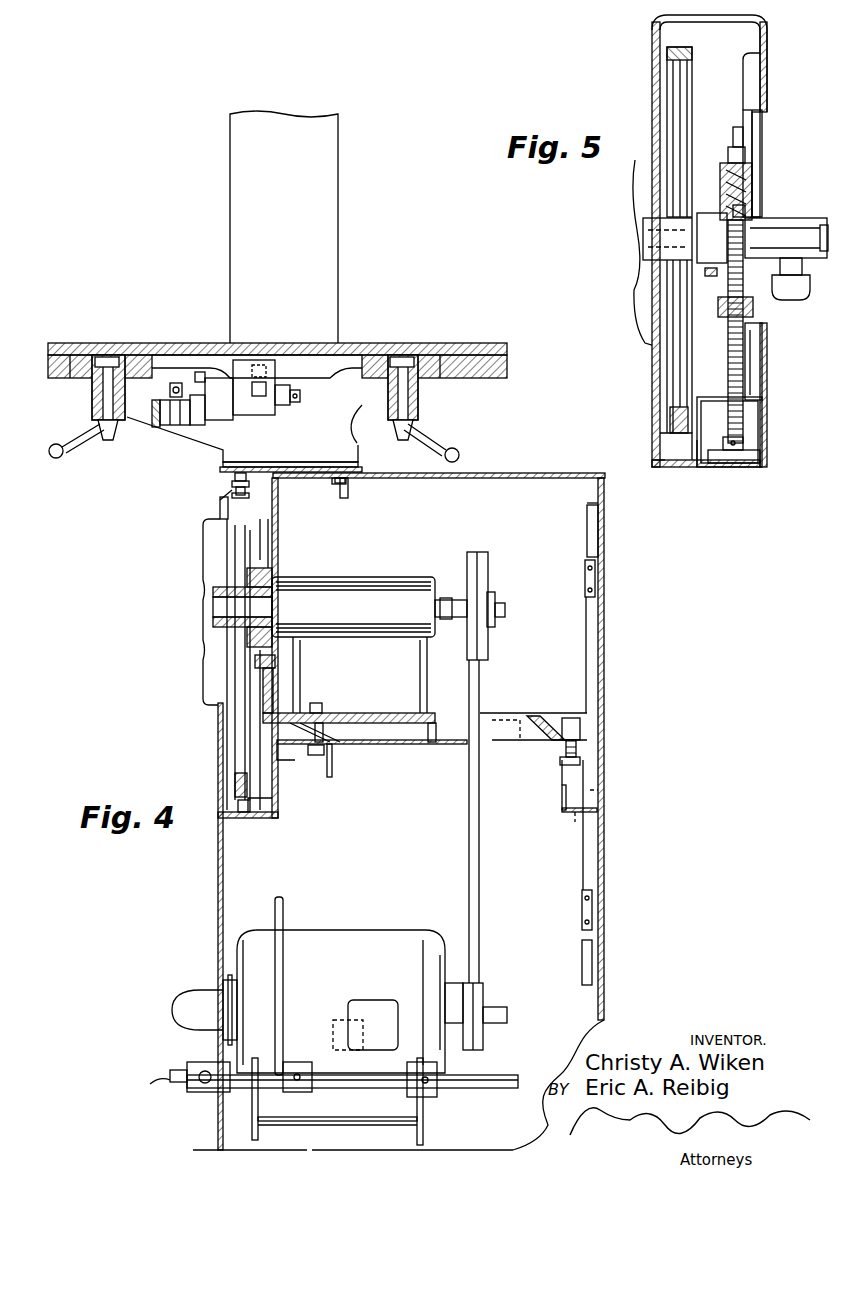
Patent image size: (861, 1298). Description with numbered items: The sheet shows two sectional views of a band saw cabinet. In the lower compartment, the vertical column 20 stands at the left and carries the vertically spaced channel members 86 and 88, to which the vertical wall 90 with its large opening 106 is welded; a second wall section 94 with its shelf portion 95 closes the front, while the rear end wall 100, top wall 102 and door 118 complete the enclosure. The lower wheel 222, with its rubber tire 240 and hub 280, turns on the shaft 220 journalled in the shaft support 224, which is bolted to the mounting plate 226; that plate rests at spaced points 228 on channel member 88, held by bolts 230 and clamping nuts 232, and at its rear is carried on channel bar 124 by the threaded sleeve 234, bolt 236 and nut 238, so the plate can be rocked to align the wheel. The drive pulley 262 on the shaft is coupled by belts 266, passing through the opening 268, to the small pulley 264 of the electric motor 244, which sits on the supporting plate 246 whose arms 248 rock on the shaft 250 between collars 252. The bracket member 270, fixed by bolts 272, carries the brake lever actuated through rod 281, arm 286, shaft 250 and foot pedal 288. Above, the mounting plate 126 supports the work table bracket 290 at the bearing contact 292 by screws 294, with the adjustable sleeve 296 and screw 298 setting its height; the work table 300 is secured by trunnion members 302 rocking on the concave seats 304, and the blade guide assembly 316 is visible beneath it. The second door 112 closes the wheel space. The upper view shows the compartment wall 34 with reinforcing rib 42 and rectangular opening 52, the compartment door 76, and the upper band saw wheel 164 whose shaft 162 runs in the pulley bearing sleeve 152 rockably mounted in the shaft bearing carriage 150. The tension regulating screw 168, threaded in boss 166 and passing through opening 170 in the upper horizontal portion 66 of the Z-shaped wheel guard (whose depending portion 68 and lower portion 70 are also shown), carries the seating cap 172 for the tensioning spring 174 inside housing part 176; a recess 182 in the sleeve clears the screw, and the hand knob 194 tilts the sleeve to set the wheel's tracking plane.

In FIG. 4, the vertical column 20 is at (342, 250).
In FIG. 4, the work table 300 is at (100, 343).
In FIG. 4, the trunnion members 302 is at (90, 385).
In FIG. 4, the arcuately concave seats 304 is at (92, 422).
In FIG. 4, the blade guide assembly 316 is at (246, 406).
In FIG. 4, the supporting bracket 290 is at (306, 446).
In FIG. 4, the rockable bearing contact 292 is at (340, 462).
In FIG. 4, the mounting plate 126 is at (282, 470).
In FIG. 4, the screws 294 is at (344, 486).
In FIG. 4, the top wall 102 is at (490, 474).
In FIG. 4, the door 118 is at (598, 625).
In FIG. 4, the adjustable sleeve 296 is at (232, 484).
In FIG. 4, the bolt or screw 298 is at (222, 500).
In FIG. 4, the horizontal member 86 is at (280, 483).
In FIG. 4, the vertical wall 90 is at (278, 532).
In FIG. 4, the large diameter opening 106 is at (228, 558).
In FIG. 4, the second door 112 is at (204, 585).
In FIG. 4, the lower wheel 222 is at (238, 802).
In FIG. 4, the horizontal flange or shelf portion 95 is at (243, 818).
In FIG. 4, the peripheral tires 240 is at (258, 812).
In FIG. 5, the peripheral tires 240 is at (672, 437).
In FIG. 4, the hub 280 is at (258, 650).
In FIG. 4, the shaft support 224 is at (408, 655).
In FIG. 4, the mounting plate 226 is at (424, 718).
In FIG. 4, the shaft 220 is at (462, 610).
In FIG. 4, the drive pulley 262 is at (490, 580).
In FIG. 4, the bolts 272 is at (262, 690).
In FIG. 4, the bracket member 270 is at (275, 695).
In FIG. 4, the vertical bolts 230 is at (318, 710).
In FIG. 4, the spaced support points 228 is at (305, 746).
In FIG. 4, the clamping nuts 232 is at (326, 750).
In FIG. 4, the horizontal member 88 is at (335, 770).
In FIG. 4, the opening 268 is at (440, 722).
In FIG. 4, the externally threaded sleeve 234 is at (545, 714).
In FIG. 4, the bolt 236 is at (575, 715).
In FIG. 4, the nut 238 is at (566, 768).
In FIG. 4, the channel bar 124 is at (582, 805).
In FIG. 4, the second vertical wall section 94 is at (218, 882).
In FIG. 4, the rear end wall 100 is at (600, 1022).
In FIG. 4, the electric motor 244 is at (345, 945).
In FIG. 4, the pulley 264 is at (495, 1025).
In FIG. 4, the drive belts 266 is at (480, 890).
In FIG. 4, the rod 281 is at (285, 910).
In FIG. 4, the shaft 250 is at (478, 1078).
In FIG. 4, the arm 286 is at (305, 1062).
In FIG. 4, the collars 252 is at (422, 1093).
In FIG. 4, the foot pedal 288 is at (190, 1092).
In FIG. 4, the upwardly extending arms 248 is at (252, 1112).
In FIG. 4, the supporting plate 246 is at (372, 1120).
In FIG. 5, the rear sheet metal body wall 34 is at (768, 78).
In FIG. 5, the reinforcing rib 42 is at (745, 68).
In FIG. 5, the compartment door 76 is at (652, 118).
In FIG. 5, the upper band saw wheel 164 is at (688, 115).
In FIG. 5, the shaft bearing carriage 150 is at (736, 147).
In FIG. 5, the housing part 176 is at (730, 160).
In FIG. 5, the tensioning spring 174 is at (727, 180).
In FIG. 5, the seating cap 172 is at (727, 205).
In FIG. 5, the rectangular openings 52 is at (762, 170).
In FIG. 5, the pulley bearing sleeve 152 is at (782, 235).
In FIG. 5, the hand knob 194 is at (790, 300).
In FIG. 5, the shaft 162 is at (655, 238).
In FIG. 5, the recess 182 is at (720, 244).
In FIG. 5, the tension regulating screw 168 is at (738, 415).
In FIG. 5, the internally threaded boss 166 is at (722, 317).
In FIG. 5, the opening 170 is at (752, 395).
In FIG. 5, the upper horizontal portion 66 is at (722, 397).
In FIG. 5, the lower horizontal portion 70 is at (662, 467).
In FIG. 5, the vertical depending portion 68 is at (697, 445).